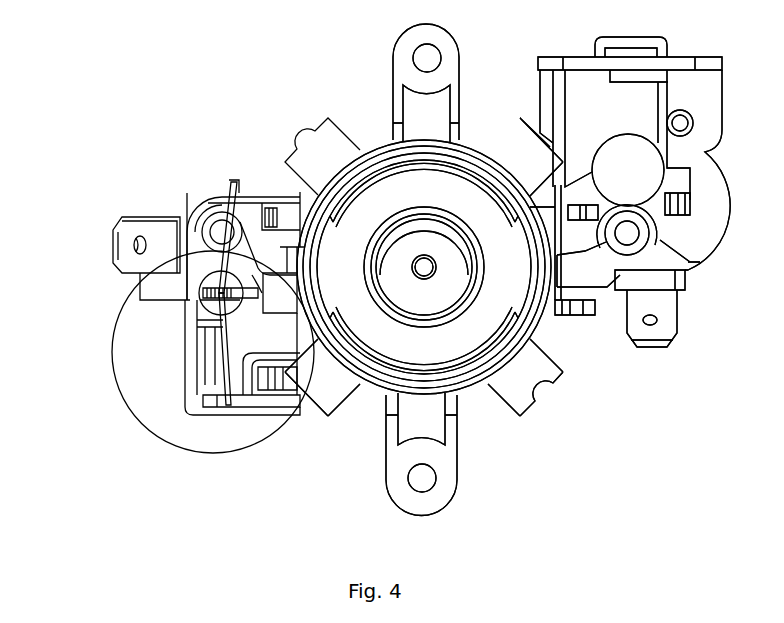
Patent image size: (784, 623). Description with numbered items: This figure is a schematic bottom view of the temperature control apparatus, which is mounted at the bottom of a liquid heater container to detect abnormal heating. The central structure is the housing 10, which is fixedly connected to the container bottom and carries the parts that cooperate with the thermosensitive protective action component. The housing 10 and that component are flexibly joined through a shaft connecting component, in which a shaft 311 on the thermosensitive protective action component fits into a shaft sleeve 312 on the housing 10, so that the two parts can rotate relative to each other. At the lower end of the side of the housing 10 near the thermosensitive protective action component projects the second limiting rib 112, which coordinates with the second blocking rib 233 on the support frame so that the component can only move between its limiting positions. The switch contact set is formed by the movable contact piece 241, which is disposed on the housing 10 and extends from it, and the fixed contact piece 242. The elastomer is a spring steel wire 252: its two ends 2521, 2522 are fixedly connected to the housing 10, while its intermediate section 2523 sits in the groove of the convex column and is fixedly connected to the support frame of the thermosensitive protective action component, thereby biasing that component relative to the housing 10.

The housing 10 is at (233, 415).
The second limiting rib 112 is at (277, 300).
The second blocking rib 233 is at (268, 412).
The movable contact piece 241 is at (258, 192).
The fixed contact piece 242 is at (177, 230).
The spring steel wire 252 is at (220, 355).
The end of the spring steel wire 2521 is at (233, 410).
The end of the spring steel wire 2522 is at (234, 185).
The intermediate section 2523 is at (214, 294).
The shaft 311 is at (282, 212).
The shaft sleeve 312 is at (338, 147).